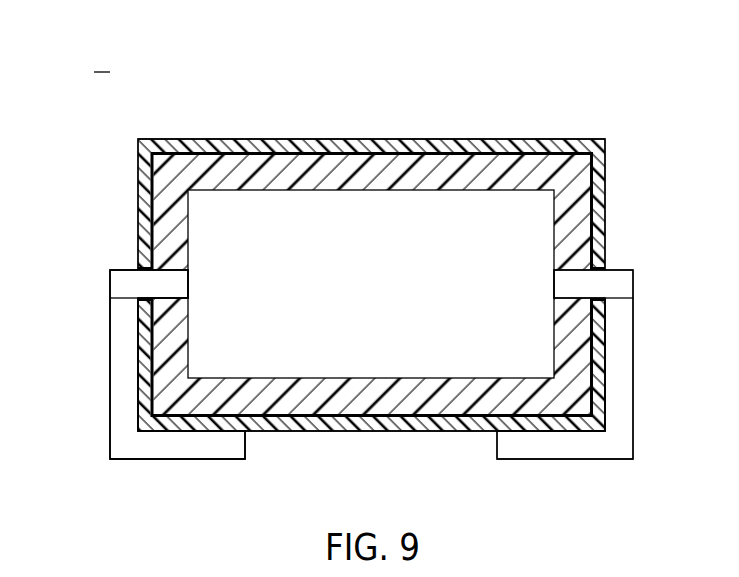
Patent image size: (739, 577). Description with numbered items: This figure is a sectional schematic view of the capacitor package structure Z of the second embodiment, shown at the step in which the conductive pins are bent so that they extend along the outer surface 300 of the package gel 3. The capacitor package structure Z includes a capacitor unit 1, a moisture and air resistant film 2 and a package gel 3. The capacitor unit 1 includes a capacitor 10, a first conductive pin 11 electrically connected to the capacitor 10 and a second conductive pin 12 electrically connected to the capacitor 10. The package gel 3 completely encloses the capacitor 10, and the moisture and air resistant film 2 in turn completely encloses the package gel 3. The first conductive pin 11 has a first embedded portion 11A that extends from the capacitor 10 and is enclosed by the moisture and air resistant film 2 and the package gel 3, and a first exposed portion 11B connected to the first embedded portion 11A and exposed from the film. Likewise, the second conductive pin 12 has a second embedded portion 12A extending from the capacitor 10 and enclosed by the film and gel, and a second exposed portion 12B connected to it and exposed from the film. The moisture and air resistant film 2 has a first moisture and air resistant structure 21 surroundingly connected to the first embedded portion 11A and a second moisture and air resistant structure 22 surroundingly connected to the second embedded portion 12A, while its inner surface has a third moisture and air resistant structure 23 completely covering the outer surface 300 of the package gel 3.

The capacitor unit 1 is at (102, 384).
The moisture and air resistant film 2 is at (276, 133).
The package gel 3 is at (458, 148).
The capacitor 10 is at (363, 205).
The first conductive pin 11 is at (42, 285).
The first embedded portion 11A is at (160, 283).
The first exposed portion 11B is at (127, 339).
The second conductive pin 12 is at (698, 285).
The second embedded portion 12A is at (580, 284).
The second exposed portion 12B is at (616, 338).
The first moisture and air resistant structure 21 is at (145, 265).
The second moisture and air resistant structure 22 is at (598, 265).
The third moisture and air resistant structure 23 is at (312, 152).
The outer surface 300 is at (504, 151).
The capacitor package structure Z is at (102, 61).